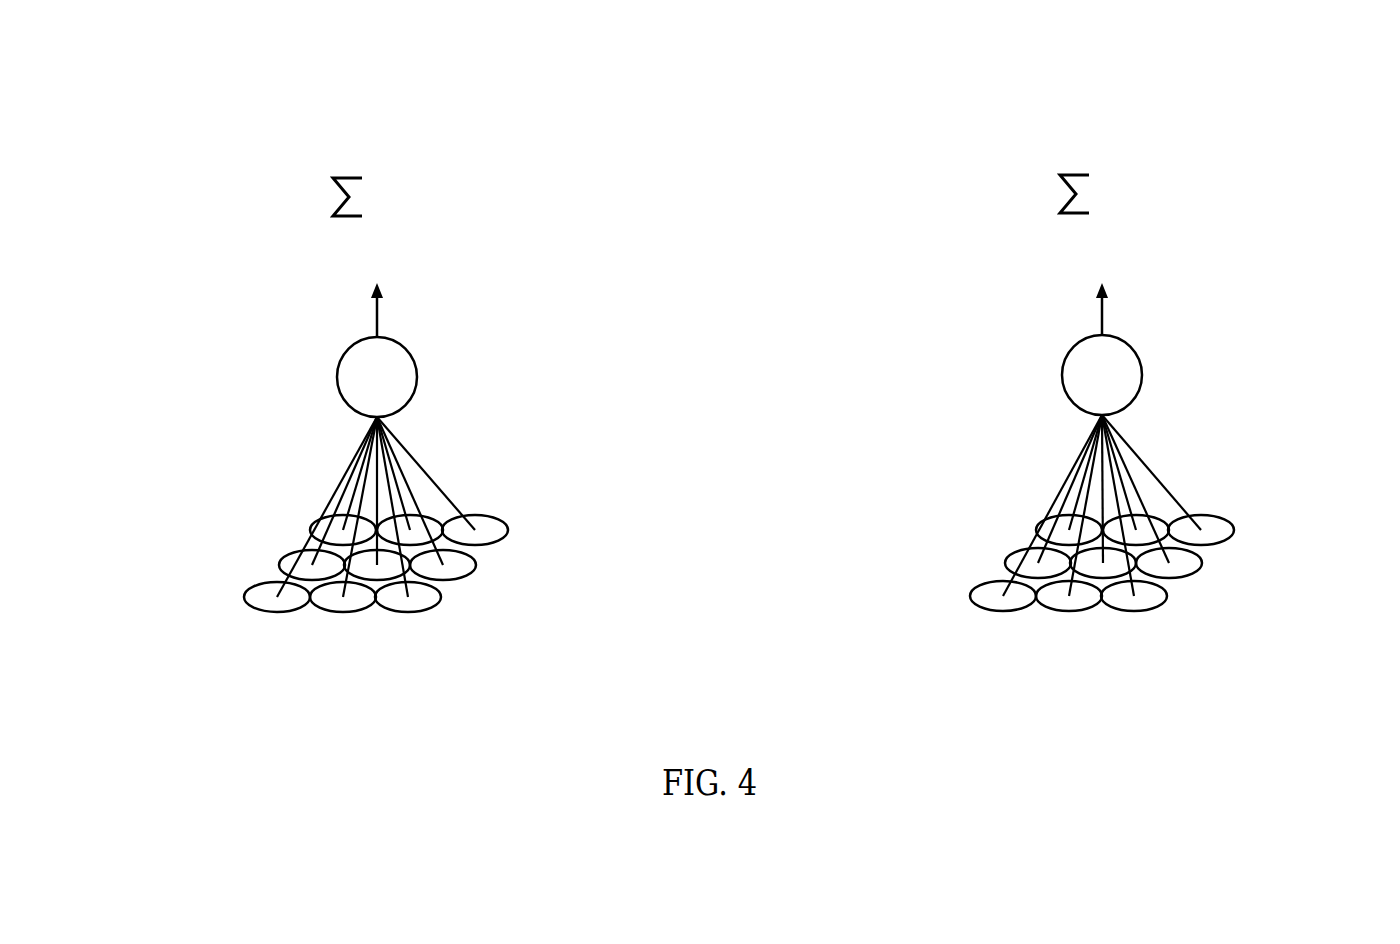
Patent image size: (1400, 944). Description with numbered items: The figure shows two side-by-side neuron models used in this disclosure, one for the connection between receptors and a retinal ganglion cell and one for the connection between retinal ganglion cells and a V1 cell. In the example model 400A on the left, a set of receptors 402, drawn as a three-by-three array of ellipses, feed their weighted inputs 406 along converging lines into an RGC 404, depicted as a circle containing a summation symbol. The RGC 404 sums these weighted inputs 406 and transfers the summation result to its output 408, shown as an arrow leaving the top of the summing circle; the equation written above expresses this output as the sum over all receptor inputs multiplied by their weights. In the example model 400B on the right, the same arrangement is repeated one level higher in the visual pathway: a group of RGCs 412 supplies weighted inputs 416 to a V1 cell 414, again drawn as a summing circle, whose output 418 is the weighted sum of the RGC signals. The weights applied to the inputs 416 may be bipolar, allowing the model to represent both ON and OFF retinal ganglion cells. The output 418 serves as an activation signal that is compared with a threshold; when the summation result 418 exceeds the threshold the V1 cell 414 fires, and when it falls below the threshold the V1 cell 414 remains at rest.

The example model 400A is at (393, 138).
The example model 400B is at (1217, 123).
The receptors 402 is at (268, 611).
The RGC 404 is at (339, 384).
The weighted inputs 406 is at (568, 541).
The output 408 is at (437, 313).
The RGCs 412 is at (975, 610).
The V1 cell 414 is at (1064, 382).
The weighted inputs 416 is at (1312, 541).
The output 418 is at (1155, 307).